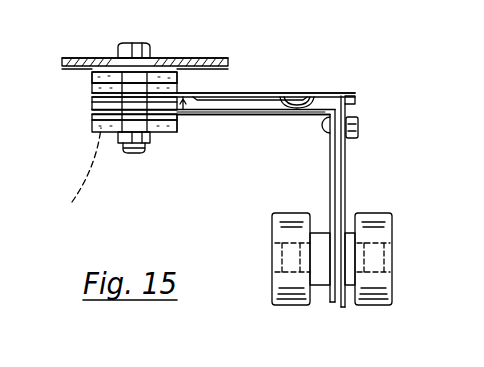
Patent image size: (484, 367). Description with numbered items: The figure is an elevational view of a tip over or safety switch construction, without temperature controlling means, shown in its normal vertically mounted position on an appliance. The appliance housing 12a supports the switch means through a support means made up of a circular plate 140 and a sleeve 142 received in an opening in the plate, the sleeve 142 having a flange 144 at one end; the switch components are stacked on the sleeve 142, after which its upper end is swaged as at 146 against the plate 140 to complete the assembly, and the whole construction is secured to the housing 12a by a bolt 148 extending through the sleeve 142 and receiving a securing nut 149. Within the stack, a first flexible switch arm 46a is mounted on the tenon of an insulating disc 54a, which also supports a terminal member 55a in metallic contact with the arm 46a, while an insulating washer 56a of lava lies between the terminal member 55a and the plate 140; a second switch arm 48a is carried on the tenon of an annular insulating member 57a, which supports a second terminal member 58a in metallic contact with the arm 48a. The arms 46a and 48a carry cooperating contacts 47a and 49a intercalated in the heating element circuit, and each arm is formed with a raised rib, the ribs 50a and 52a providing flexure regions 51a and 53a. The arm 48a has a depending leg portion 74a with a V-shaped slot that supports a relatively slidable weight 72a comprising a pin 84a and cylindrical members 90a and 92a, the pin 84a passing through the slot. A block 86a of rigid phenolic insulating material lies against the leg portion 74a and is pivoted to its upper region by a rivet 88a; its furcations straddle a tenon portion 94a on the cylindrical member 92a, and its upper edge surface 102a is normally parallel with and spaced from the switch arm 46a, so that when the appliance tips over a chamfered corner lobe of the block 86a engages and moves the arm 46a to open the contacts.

The appliance housing 12a is at (100, 57).
The circular plate 140 is at (190, 61).
The bolt 148 is at (137, 42).
The swaged end 146 is at (163, 60).
The insulating washer 56a is at (92, 77).
The terminal member 55a is at (92, 88).
The insulating disc 54a is at (92, 99).
The second terminal member 58a is at (92, 110).
The annular insulating member 57a is at (95, 120).
The securing nut 149 is at (114, 113).
The sleeve 142 is at (72, 202).
The flange 144 is at (152, 144).
The second switch arm 48a is at (250, 100).
The first flexible switch arm 46a is at (240, 92).
The contact 49a is at (302, 98).
The contact 47a is at (293, 104).
The upper edge surface 102a is at (348, 104).
The raised portion or rib 50a is at (222, 115).
The raised portion or rib 52a is at (260, 116).
The flexure region 51a is at (188, 110).
The flexure region 53a is at (177, 128).
The insulating block 86a is at (345, 153).
The depending leg portion 74a is at (327, 138).
The rivet 88a is at (358, 121).
The cylindrical member 90a is at (293, 212).
The cylindrical member 92a is at (383, 213).
The tenon portion 94a is at (318, 233).
The pin 84a is at (272, 231).
The slidable mass or weight 72a is at (263, 316).